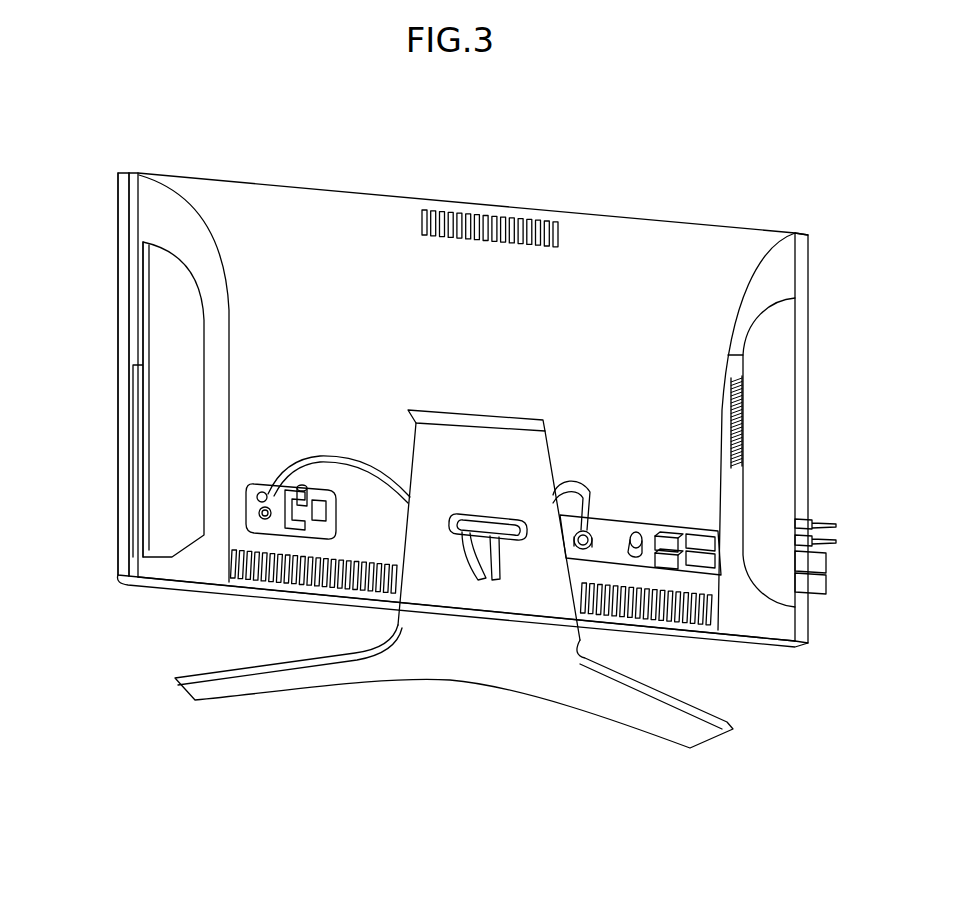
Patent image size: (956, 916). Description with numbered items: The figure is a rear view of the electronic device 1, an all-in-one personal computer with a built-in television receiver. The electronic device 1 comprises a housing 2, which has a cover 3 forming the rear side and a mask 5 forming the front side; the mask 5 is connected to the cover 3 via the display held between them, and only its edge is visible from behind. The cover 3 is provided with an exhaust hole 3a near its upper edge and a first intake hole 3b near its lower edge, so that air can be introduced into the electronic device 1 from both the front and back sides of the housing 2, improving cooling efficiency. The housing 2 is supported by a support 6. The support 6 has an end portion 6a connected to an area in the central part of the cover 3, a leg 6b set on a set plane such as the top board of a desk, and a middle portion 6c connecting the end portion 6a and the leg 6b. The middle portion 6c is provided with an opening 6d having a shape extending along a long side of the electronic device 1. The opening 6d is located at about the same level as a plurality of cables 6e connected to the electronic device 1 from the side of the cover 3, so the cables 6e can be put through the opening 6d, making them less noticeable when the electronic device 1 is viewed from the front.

The electronic device 1 is at (493, 178).
The housing 2 is at (440, 184).
The cover 3 is at (678, 243).
The exhaust hole 3a is at (553, 222).
The first intake hole 3b is at (262, 580).
The mask 5 is at (117, 230).
The support 6 is at (443, 660).
The end portion 6a is at (540, 452).
The leg 6b is at (322, 687).
The middle portion 6c is at (494, 626).
The opening 6d is at (528, 532).
The cables 6e is at (473, 551).